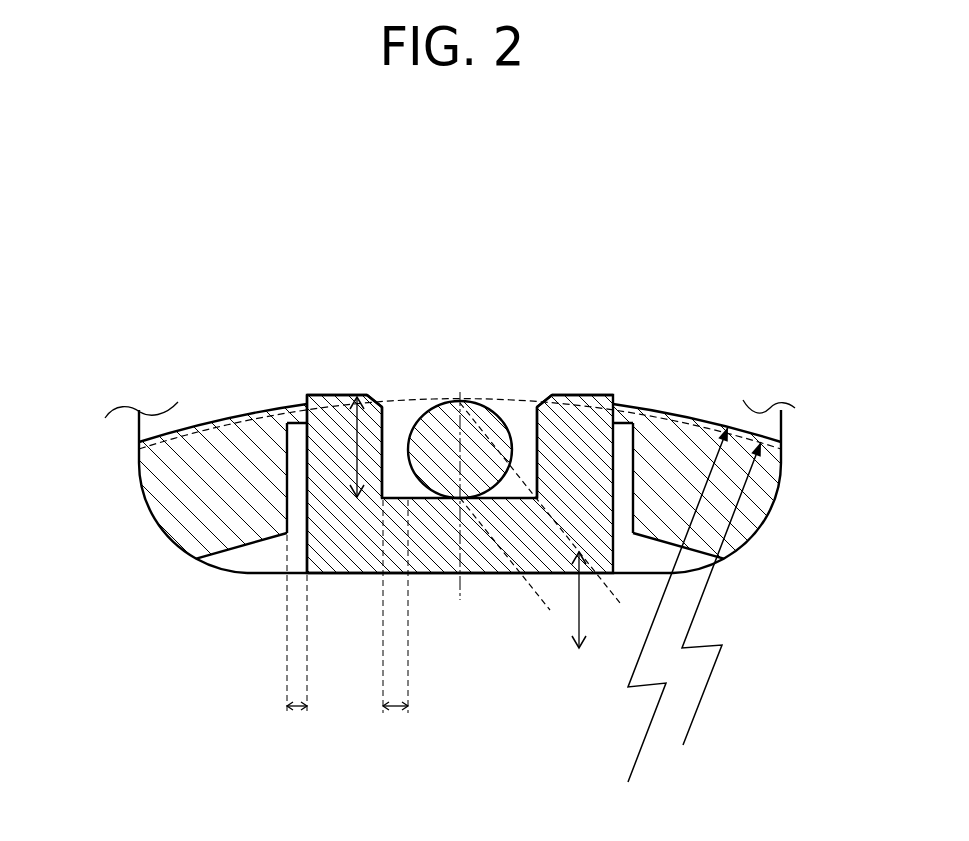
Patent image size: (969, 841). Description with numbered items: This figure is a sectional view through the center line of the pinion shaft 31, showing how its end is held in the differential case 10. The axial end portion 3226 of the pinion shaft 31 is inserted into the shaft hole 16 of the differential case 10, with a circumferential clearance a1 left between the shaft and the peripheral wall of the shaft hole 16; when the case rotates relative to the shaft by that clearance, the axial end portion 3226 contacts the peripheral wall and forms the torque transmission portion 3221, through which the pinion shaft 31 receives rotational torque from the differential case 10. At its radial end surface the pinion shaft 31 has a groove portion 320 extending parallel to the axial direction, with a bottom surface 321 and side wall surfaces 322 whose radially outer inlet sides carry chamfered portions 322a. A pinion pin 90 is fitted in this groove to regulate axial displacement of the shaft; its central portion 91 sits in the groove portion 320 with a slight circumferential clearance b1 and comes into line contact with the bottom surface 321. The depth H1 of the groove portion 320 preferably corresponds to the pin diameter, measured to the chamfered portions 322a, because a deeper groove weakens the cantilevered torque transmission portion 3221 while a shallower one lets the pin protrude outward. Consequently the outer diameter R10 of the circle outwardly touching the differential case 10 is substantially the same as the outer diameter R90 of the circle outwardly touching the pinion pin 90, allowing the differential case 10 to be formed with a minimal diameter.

The differential case 10 is at (457, 453).
The pinion pin 90 is at (673, 450).
The central portion 91 is at (618, 408).
The shaft hole 16 is at (292, 490).
The pinion shaft 31 is at (337, 520).
The groove portion 320 is at (578, 183).
The bottom surface 321 is at (452, 497).
The side wall surfaces 322 is at (388, 447).
The chamfered portions 322a is at (378, 397).
The torque transmission portion 3221 is at (338, 425).
The axial end portion 3226 is at (290, 447).
The depth of the groove portion H1 is at (353, 457).
The clearance a1 is at (295, 639).
The clearance b1 is at (395, 621).
The outer diameter R10 is at (640, 757).
The outer diameter R90 is at (715, 667).